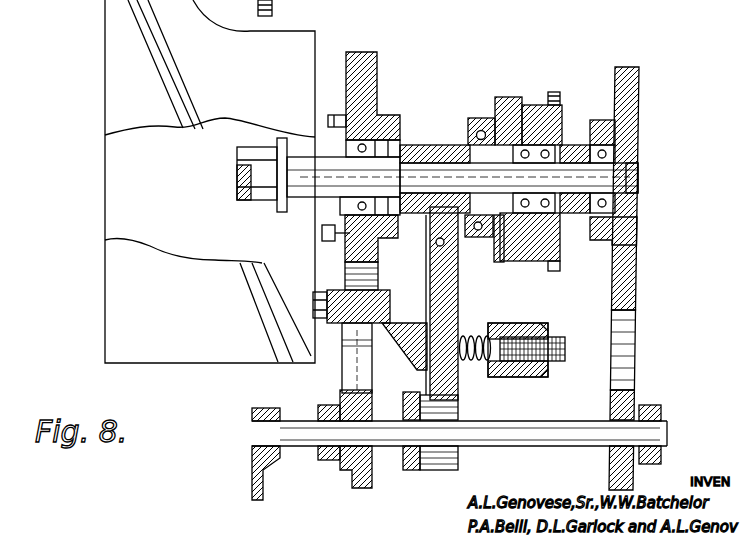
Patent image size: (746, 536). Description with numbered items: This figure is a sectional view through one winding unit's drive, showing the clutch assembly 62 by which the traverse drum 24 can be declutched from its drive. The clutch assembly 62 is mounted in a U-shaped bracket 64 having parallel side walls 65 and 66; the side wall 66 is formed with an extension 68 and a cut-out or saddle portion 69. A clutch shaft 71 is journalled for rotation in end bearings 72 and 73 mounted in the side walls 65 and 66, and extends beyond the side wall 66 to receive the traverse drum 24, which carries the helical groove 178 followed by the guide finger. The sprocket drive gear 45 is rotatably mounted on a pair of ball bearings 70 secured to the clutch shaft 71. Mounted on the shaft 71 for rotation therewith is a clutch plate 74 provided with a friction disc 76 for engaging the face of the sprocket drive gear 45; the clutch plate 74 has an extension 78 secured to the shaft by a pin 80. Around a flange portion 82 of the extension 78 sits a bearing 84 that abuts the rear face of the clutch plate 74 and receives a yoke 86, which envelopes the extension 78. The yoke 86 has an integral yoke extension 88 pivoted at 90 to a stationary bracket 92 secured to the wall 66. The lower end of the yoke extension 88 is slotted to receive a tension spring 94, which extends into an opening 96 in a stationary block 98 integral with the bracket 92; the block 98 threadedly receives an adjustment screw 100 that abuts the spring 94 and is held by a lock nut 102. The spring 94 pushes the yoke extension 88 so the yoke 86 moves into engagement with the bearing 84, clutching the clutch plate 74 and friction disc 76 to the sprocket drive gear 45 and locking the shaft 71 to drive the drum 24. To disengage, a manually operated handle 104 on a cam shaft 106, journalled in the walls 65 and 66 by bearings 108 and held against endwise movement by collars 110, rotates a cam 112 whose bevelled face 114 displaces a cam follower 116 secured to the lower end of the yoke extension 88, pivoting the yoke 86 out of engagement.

The traverse drum 24 is at (110, 348).
The helical groove 178 is at (143, 14).
The bevelled face 114 is at (370, 8).
The end bearing 73 is at (333, 207).
The yoke 86 is at (437, 158).
The side wall 66 is at (377, 88).
The pin 80 is at (392, 280).
The yoke extension 88 is at (445, 298).
The pivot 90 is at (436, 246).
The stationary bracket 92 is at (410, 343).
The saddle portion 69 is at (357, 363).
The cam follower 116 is at (452, 398).
The cam 112 is at (423, 472).
The tension spring 94 is at (472, 362).
The opening 96 is at (505, 327).
The stationary block 98 is at (522, 378).
The lock nut 102 is at (548, 327).
The adjustment screw 100 is at (557, 365).
The extension 78 is at (452, 143).
The bearing 84 is at (478, 120).
The friction disc 76 is at (508, 100).
The clutch assembly 62 is at (527, 83).
The sprocket drive gear 45 is at (558, 93).
The ball bearings 70 is at (535, 217).
The clutch plate 74 is at (502, 257).
The flange portion 82 is at (495, 242).
The clutch shaft 71 is at (573, 145).
The side wall 65 is at (633, 115).
The U-shaped bracket 64 is at (655, 80).
The end bearing 72 is at (638, 225).
The extension 68 is at (634, 398).
The cam shaft 106 is at (538, 434).
The handle 104 is at (252, 468).
The collars 110 is at (338, 458).
The bearings 108 is at (370, 456).